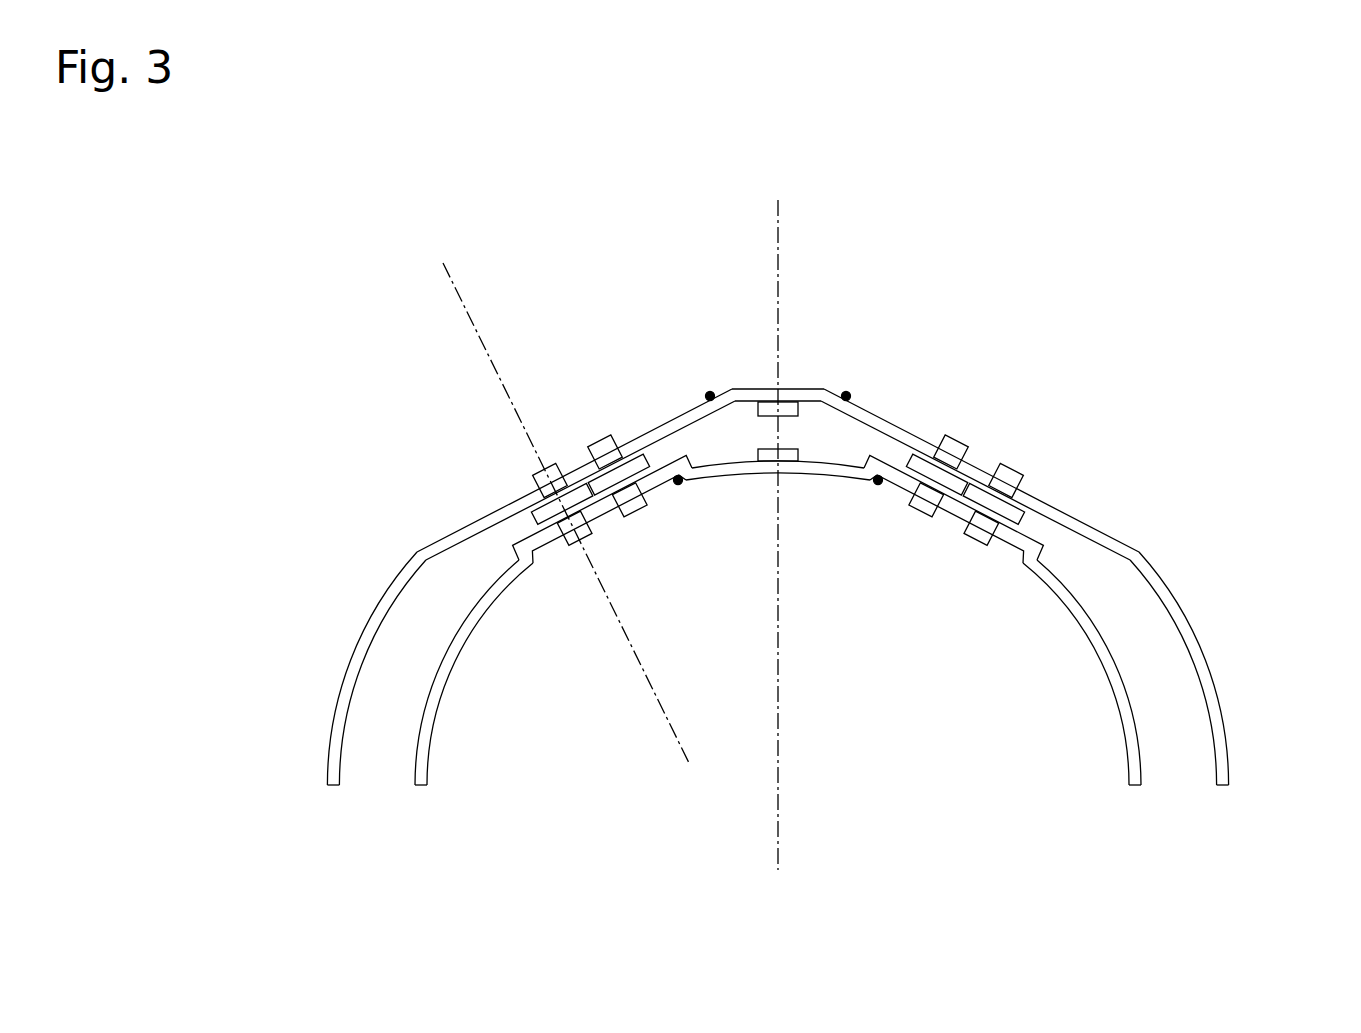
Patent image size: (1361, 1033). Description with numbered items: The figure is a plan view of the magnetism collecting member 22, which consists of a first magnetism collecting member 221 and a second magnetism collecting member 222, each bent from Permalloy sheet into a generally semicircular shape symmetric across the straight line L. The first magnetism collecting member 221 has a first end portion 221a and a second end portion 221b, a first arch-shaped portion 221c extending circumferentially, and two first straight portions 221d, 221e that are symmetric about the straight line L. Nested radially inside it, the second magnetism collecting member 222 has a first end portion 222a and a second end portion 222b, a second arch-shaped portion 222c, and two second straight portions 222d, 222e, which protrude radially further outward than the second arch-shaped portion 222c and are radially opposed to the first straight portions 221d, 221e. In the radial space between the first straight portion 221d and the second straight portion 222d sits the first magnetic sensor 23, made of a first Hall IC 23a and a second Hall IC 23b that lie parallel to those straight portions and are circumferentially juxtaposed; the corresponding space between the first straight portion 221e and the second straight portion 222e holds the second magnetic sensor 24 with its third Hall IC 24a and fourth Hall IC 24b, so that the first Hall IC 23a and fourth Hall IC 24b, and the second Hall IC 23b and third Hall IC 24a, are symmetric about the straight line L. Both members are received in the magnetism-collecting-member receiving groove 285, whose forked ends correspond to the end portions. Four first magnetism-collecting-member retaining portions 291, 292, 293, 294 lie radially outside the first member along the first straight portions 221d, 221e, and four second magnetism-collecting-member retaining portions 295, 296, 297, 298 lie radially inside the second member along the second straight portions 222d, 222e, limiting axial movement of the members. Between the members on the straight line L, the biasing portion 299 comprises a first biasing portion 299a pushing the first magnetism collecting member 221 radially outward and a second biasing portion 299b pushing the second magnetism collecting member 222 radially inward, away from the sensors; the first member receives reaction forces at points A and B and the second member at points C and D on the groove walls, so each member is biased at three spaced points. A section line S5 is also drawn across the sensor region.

The magnetism collecting member 22 is at (896, 390).
The first magnetism collecting member 221 is at (817, 584).
The first end portion 221a is at (333, 787).
The second end portion 221b is at (1225, 787).
The first arch-shaped portion 221c is at (742, 387).
The first straight portion 221d is at (465, 524).
The first straight portion 221e is at (940, 445).
The second magnetism collecting member 222 is at (792, 671).
The first end portion 222a is at (420, 787).
The second end portion 222b is at (1135, 787).
The second arch-shaped portion 222c is at (750, 481).
The second straight portion 222d is at (543, 556).
The second straight portion 222e is at (1013, 548).
The first magnetic sensor 23 is at (583, 352).
The first Hall IC 23a is at (547, 472).
The second Hall IC 23b is at (619, 456).
The second magnetic sensor 24 is at (937, 680).
The third Hall IC 24a is at (936, 488).
The fourth Hall IC 24b is at (1017, 538).
The magnetism-collecting-member receiving groove 285 is at (404, 657).
The first magnetism-collecting-member retaining portion 291 is at (547, 468).
The first magnetism-collecting-member retaining portion 292 is at (604, 441).
The first magnetism-collecting-member retaining portion 293 is at (957, 440).
The first magnetism-collecting-member retaining portion 294 is at (1012, 470).
The second magnetism-collecting-member retaining portion 295 is at (588, 536).
The second magnetism-collecting-member retaining portion 296 is at (645, 507).
The second magnetism-collecting-member retaining portion 297 is at (912, 495).
The second magnetism-collecting-member retaining portion 298 is at (987, 538).
The biasing portion 299 is at (916, 248).
The first biasing portion 299a is at (775, 402).
The second biasing portion 299b is at (800, 449).
The point A is at (710, 392).
The point B is at (847, 392).
The point C is at (682, 485).
The point D is at (876, 485).
The straight line L is at (773, 208).
The section line S5 is at (447, 278).